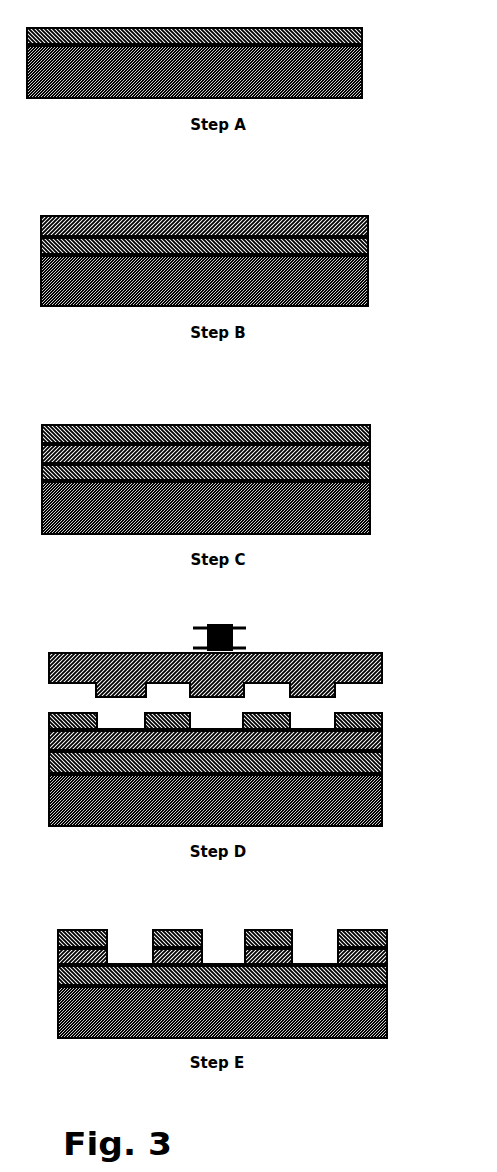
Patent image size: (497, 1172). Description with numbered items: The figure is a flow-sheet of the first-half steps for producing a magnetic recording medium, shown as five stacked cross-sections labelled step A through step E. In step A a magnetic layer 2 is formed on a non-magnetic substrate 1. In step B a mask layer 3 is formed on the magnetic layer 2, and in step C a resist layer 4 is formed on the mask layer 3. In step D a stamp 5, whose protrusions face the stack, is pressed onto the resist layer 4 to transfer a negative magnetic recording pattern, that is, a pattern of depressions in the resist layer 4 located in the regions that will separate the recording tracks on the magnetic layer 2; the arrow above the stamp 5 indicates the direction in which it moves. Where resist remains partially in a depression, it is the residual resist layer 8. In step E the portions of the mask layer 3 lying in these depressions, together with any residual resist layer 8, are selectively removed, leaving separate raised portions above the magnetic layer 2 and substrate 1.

The non-magnetic substrate 1 is at (364, 78).
The magnetic layer 2 is at (364, 36).
The mask layer 3 is at (370, 228).
The resist layer 4 is at (372, 437).
The stamp 5 is at (385, 673).
The residual resist layer 8 is at (313, 728).